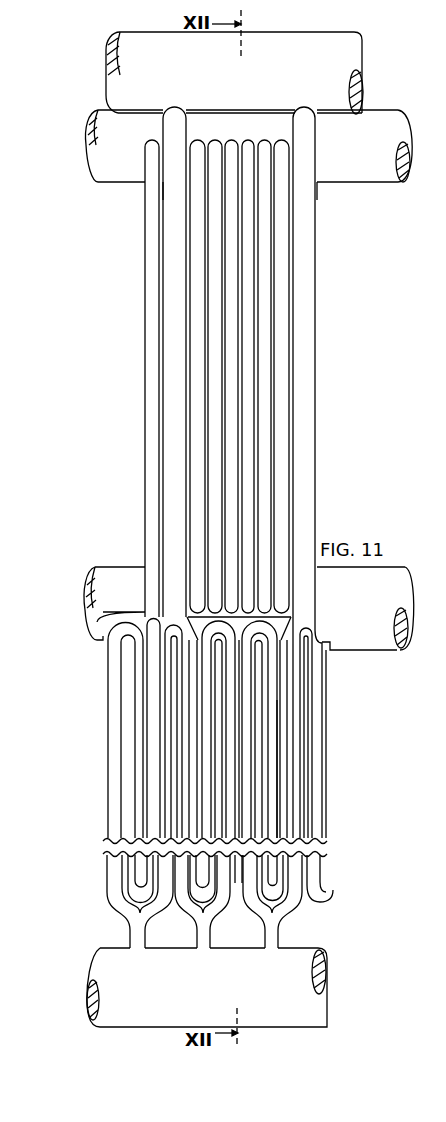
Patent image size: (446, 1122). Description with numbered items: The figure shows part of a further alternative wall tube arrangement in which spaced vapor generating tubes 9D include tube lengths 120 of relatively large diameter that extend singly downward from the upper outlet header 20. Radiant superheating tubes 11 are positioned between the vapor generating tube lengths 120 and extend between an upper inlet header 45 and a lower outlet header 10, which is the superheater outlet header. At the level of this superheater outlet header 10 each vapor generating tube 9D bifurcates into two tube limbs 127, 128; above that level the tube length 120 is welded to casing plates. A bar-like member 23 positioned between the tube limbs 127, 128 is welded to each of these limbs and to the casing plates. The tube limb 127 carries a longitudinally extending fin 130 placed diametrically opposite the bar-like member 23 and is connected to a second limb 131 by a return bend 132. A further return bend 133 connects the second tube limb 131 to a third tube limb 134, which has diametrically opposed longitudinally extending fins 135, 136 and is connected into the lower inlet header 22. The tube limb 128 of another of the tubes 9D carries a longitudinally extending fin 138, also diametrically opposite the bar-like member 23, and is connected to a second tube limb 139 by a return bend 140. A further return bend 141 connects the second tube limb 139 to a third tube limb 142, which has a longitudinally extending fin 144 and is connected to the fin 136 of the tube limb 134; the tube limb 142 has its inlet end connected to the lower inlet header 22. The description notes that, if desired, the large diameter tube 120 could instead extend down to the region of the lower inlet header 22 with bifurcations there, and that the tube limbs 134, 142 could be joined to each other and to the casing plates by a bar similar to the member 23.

The upper outlet header 20 is at (343, 58).
The upper inlet header 45 is at (378, 168).
The lower outlet header 10 is at (382, 635).
The lower inlet header 22 is at (307, 1003).
The tube length 120 is at (165, 271).
The vapor generating tube 9D is at (172, 193).
The radiant superheating tube 11 is at (233, 235).
The return bend 141 is at (187, 620).
The return bend 133 is at (270, 630).
The tube limb 127 is at (163, 659).
The tube limb 128 is at (170, 675).
The bar-like member 23 is at (172, 690).
The longitudinally extending fin 138 is at (190, 709).
The second tube limb 139 is at (202, 730).
The third tube limb 142 is at (225, 741).
The longitudinally extending fin 144 is at (213, 755).
The longitudinally extending fin 136 is at (237, 778).
The third tube limb 134 is at (247, 745).
The longitudinally extending fin 135 is at (260, 762).
The second limb 131 is at (273, 730).
The longitudinally extending fin 130 is at (283, 714).
The return bend 140 is at (204, 901).
The return bend 132 is at (290, 902).